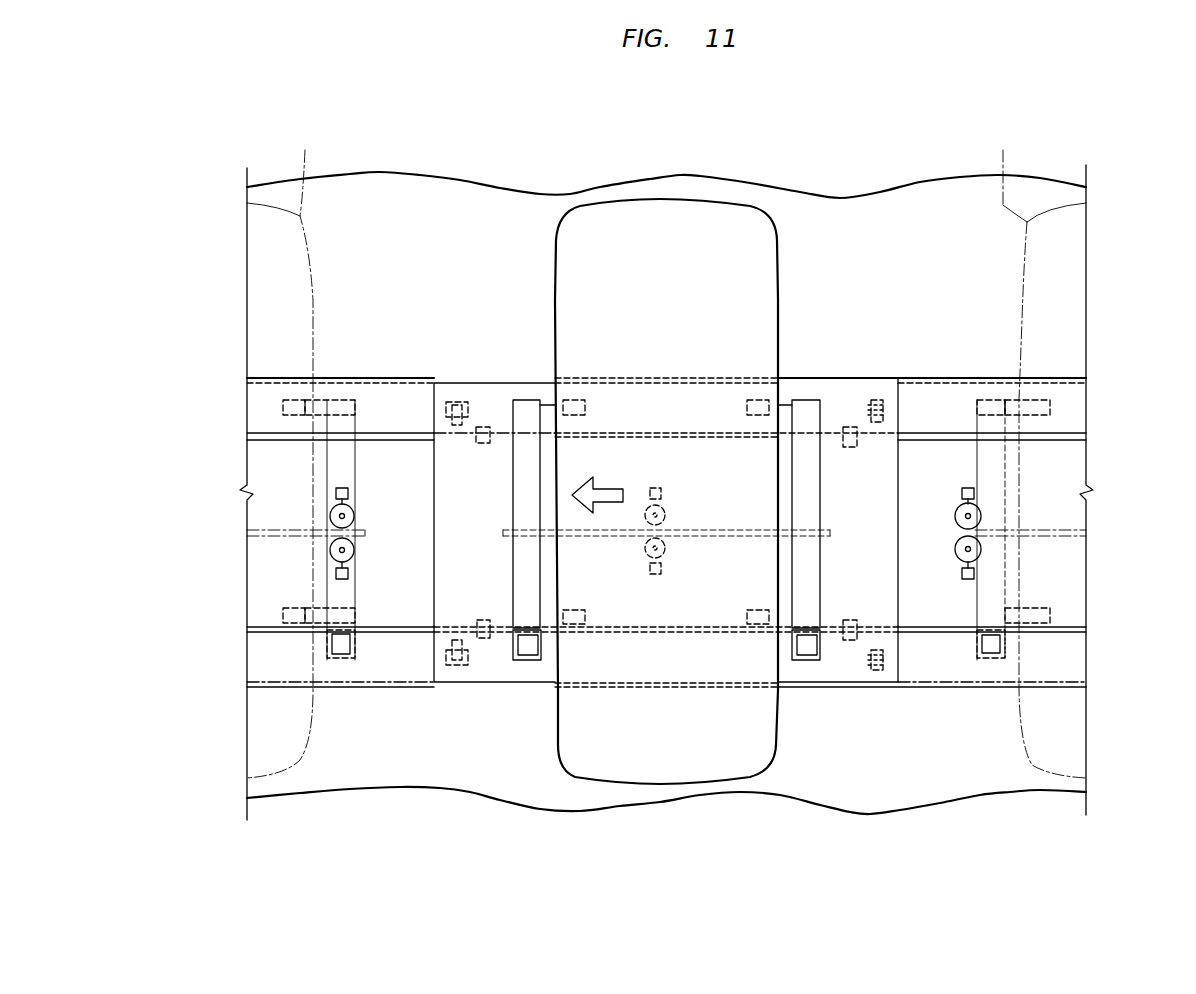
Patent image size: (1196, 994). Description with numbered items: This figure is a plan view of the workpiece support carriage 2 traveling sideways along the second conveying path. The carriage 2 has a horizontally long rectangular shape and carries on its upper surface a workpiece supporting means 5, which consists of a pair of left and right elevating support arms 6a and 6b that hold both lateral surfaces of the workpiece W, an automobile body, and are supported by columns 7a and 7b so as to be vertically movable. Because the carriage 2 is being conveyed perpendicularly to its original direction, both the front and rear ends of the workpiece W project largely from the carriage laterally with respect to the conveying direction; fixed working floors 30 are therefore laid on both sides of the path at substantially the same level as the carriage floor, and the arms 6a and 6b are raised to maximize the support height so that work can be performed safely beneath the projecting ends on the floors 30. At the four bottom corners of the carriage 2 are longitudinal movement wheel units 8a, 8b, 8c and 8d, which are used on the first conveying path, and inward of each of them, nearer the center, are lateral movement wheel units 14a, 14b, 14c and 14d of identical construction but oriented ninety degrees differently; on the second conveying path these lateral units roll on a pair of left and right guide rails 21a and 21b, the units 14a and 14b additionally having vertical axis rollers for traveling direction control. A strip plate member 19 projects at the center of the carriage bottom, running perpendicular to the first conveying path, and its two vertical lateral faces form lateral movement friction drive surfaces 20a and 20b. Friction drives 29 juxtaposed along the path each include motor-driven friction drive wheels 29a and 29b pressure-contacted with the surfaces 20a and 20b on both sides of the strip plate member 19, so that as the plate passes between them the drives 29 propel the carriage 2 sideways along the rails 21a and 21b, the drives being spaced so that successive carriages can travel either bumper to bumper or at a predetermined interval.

The workpiece W is at (300, 215).
The fixed working floor 30 is at (467, 225).
The workpiece support carriage 2 is at (377, 383).
The elevating support arm 6a is at (340, 462).
The elevating support arm 6b is at (520, 495).
The longitudinal movement wheel unit 8a is at (877, 680).
The longitudinal movement wheel unit 8b is at (877, 398).
The longitudinal movement wheel unit 8c is at (456, 672).
The longitudinal movement wheel unit 8d is at (457, 397).
The lateral movement wheel unit 14a is at (484, 645).
The lateral movement wheel unit 14b is at (850, 618).
The lateral movement wheel unit 14c is at (485, 423).
The lateral movement wheel unit 14d is at (853, 447).
The guide rail 21a is at (265, 627).
The guide rail 21b is at (268, 437).
The strip plate member 19 is at (252, 530).
The friction drive 29 is at (355, 498).
The motor-driven friction drive wheel 29a is at (354, 555).
The motor-driven friction drive wheel 29b is at (352, 516).
The lateral movement friction drive surface 20a is at (626, 545).
The lateral movement friction drive surface 20b is at (632, 515).
The column 7a is at (330, 645).
The column 7b is at (540, 647).
The workpiece supporting means 5 is at (345, 663).